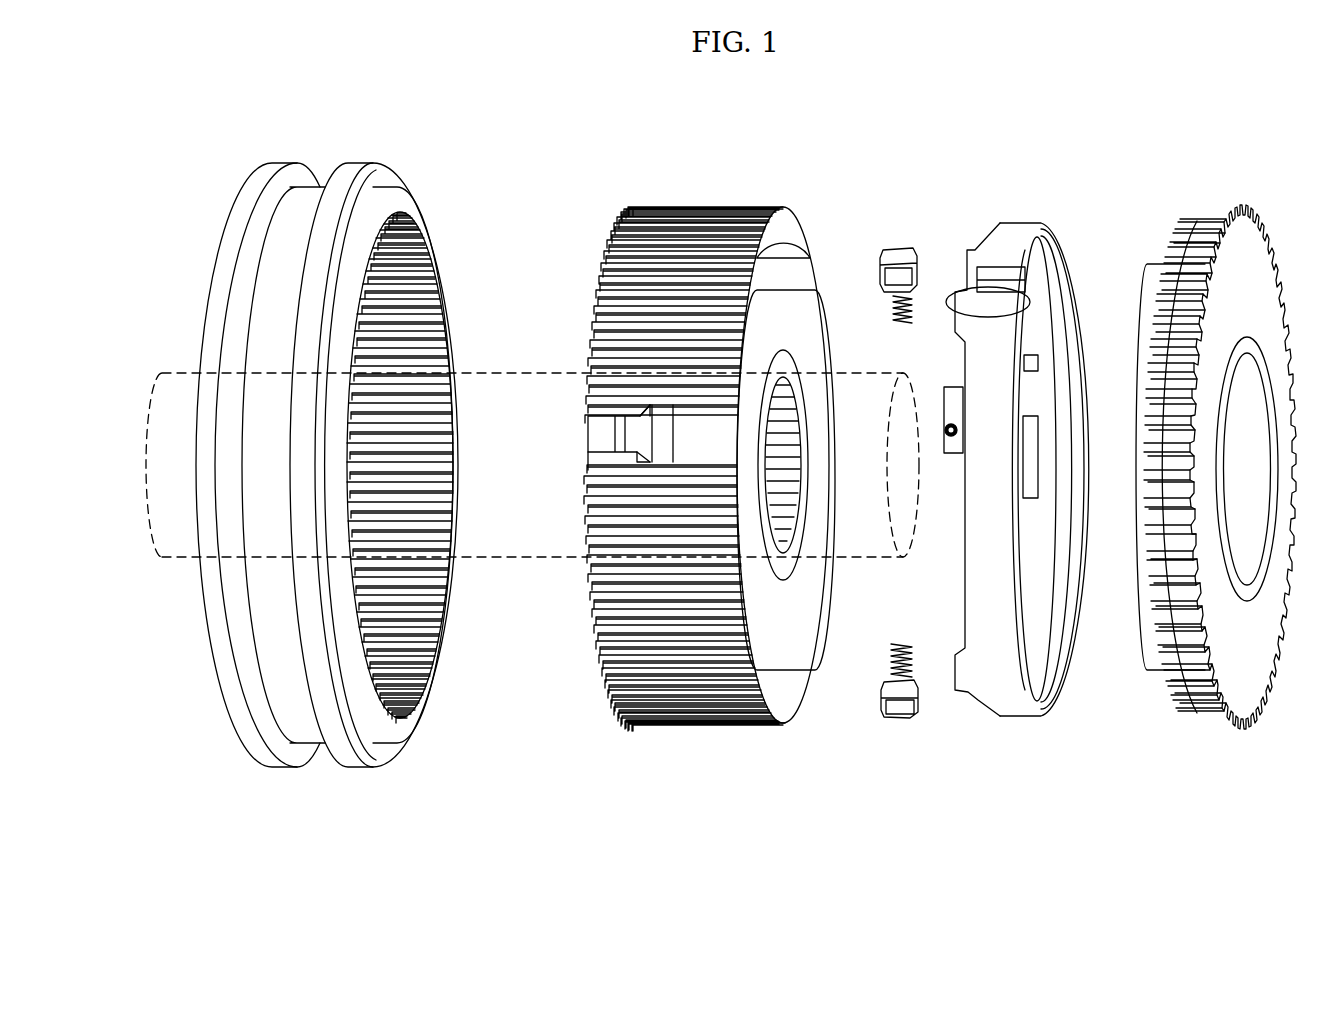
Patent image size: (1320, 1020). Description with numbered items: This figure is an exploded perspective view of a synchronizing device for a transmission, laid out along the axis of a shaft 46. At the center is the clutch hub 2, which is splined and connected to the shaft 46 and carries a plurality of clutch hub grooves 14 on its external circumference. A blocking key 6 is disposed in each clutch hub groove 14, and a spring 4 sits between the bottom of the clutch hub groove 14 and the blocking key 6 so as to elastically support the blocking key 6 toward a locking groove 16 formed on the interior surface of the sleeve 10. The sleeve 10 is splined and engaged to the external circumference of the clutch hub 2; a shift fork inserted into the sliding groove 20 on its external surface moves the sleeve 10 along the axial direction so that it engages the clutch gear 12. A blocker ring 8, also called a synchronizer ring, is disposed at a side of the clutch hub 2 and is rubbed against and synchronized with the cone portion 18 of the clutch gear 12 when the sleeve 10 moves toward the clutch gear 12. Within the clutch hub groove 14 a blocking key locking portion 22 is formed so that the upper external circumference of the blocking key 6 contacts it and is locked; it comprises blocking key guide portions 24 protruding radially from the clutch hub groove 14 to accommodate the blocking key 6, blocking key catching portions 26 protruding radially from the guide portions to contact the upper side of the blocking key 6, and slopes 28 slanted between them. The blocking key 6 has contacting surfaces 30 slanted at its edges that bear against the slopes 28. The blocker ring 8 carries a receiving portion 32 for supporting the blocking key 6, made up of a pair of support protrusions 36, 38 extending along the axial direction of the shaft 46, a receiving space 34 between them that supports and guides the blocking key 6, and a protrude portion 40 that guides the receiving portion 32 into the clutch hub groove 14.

The clutch hub 2 is at (680, 418).
The spring 4 is at (884, 311).
The blocking key 6 is at (874, 466).
The blocker ring 8 is at (1007, 415).
The sleeve 10 is at (357, 418).
The clutch gear 12 is at (1222, 414).
The clutch hub groove 14 is at (622, 430).
The locking groove 16 is at (430, 595).
The cone portion 18 is at (1168, 262).
The sliding groove 20 is at (300, 200).
The blocking key locking portion 22 is at (580, 406).
The blocking key guide portions 24 is at (762, 450).
The blocking key catching portions 26 is at (603, 415).
The slopes 28 is at (640, 408).
The contacting surfaces 30 is at (880, 272).
The receiving portion 32 is at (962, 234).
The receiving space 34 is at (1030, 300).
The support protrusion 36 is at (980, 243).
The support protrusion 38 is at (962, 327).
The protrude portion 40 is at (1020, 270).
The shaft 46 is at (173, 375).